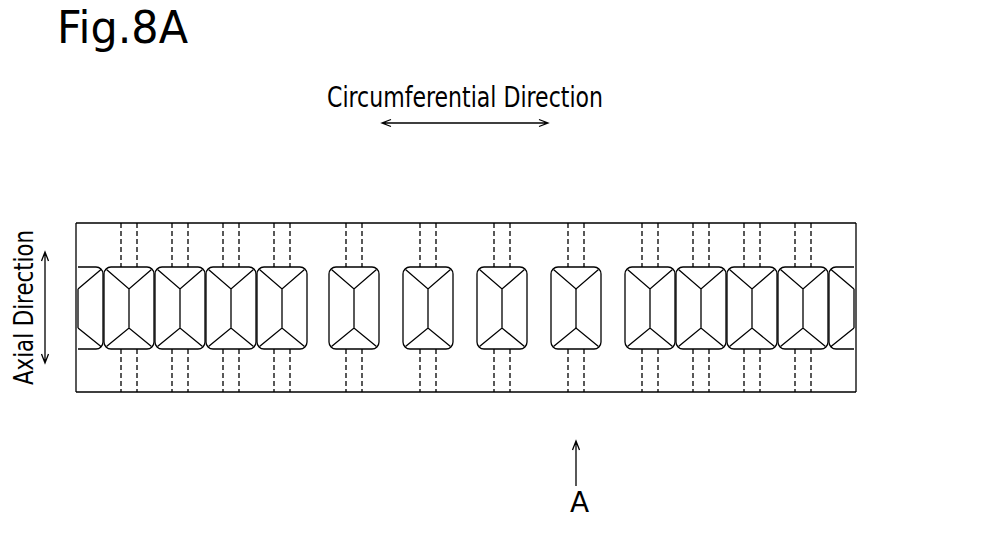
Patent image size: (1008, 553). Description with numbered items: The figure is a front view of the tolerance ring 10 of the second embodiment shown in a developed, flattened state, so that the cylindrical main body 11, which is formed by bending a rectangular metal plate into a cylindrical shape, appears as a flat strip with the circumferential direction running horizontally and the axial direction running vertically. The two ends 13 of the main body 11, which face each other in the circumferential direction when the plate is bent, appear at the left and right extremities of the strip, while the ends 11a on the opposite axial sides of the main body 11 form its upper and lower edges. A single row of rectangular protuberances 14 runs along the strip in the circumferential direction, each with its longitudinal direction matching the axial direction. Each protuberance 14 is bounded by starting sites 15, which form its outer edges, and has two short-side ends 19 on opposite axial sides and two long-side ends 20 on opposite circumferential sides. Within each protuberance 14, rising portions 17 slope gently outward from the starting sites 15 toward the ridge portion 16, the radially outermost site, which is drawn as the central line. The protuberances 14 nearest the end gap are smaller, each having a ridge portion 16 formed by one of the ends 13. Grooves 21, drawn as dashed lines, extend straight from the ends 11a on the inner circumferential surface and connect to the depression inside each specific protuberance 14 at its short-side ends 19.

The tolerance ring 10 is at (145, 117).
The main body 11 is at (257, 216).
The ends of the main body 11a is at (316, 223).
The end 13 is at (76, 232).
The protuberance 14 is at (98, 256).
The starting site 15 is at (583, 268).
The ridge portion 16 is at (574, 303).
The rising portion 17 is at (557, 320).
The short-side end 19 is at (562, 267).
The long-side end 20 is at (605, 327).
The groove 21 is at (579, 235).